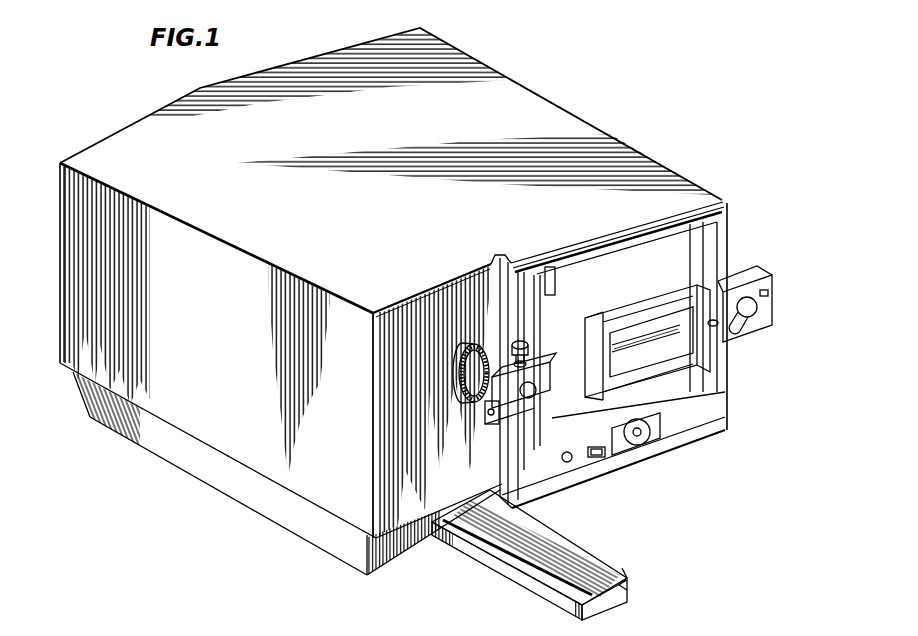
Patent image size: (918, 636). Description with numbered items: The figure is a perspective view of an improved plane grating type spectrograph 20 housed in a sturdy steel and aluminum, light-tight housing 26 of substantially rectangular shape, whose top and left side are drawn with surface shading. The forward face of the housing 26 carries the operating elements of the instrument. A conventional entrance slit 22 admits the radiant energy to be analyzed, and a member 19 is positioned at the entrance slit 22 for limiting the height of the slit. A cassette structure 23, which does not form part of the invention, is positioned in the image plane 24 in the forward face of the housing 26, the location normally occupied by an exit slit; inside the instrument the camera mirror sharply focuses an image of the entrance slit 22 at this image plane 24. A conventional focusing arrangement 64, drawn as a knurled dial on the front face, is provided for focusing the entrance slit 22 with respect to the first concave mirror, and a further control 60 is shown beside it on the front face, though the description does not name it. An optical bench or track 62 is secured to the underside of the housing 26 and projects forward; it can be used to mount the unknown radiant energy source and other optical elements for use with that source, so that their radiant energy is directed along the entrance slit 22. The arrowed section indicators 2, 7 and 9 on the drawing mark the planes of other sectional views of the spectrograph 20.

The section line 2- 2 is at (562, 375).
The section line 7- 7 is at (645, 270).
The section line 9- 9 is at (500, 270).
The member 19 is at (487, 413).
The spectrograph 20 is at (585, 114).
The entrance slit 22 is at (526, 449).
The cassette structure 23 is at (678, 350).
The image plane 24 is at (647, 338).
The housing 26 is at (367, 136).
The control knob 60 is at (517, 343).
The optical bench or track 62 is at (512, 561).
The focusing arrangement 64 is at (460, 372).